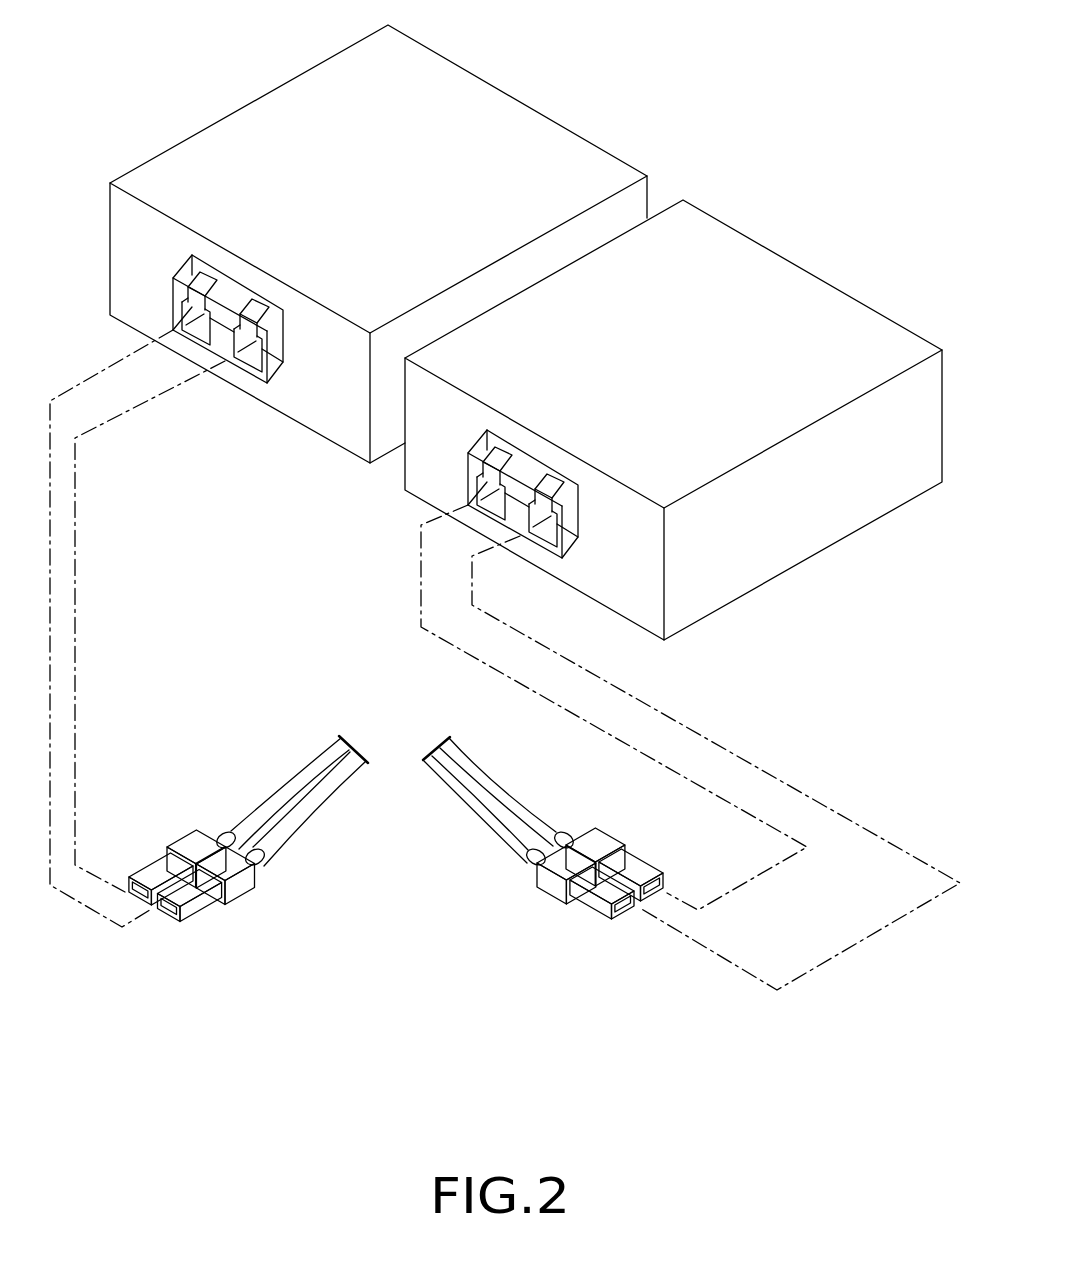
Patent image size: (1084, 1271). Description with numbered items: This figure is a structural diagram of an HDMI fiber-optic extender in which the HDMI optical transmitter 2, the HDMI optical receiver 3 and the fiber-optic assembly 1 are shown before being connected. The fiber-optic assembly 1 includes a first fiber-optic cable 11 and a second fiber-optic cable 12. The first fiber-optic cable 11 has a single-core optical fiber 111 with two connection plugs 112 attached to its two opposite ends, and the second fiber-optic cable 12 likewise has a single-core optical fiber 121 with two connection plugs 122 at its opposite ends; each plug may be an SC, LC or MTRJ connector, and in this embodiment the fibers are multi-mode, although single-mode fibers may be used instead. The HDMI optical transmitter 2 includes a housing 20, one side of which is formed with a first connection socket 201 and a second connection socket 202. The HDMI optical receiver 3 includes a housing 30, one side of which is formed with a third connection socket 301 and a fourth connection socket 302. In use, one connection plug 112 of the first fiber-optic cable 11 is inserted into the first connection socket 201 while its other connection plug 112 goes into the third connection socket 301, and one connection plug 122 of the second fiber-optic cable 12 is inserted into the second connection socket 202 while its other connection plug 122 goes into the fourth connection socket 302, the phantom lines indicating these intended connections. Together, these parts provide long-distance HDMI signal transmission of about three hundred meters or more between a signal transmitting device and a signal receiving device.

The fiber-optic assembly 1 is at (437, 821).
The first fiber-optic cable 11 is at (363, 823).
The single-core optical fiber 111 is at (503, 830).
The connection plug 112 is at (172, 862).
The second fiber-optic cable 12 is at (443, 809).
The single-core optical fiber 121 is at (533, 817).
The connection plug 122 is at (203, 893).
The HDMI optical transmitter 2 is at (344, 244).
The housing 20 is at (336, 134).
The first connection socket 201 is at (253, 354).
The second connection socket 202 is at (197, 308).
The HDMI optical receiver 3 is at (640, 399).
The housing 30 is at (728, 277).
The third connection socket 301 is at (548, 529).
The fourth connection socket 302 is at (492, 483).